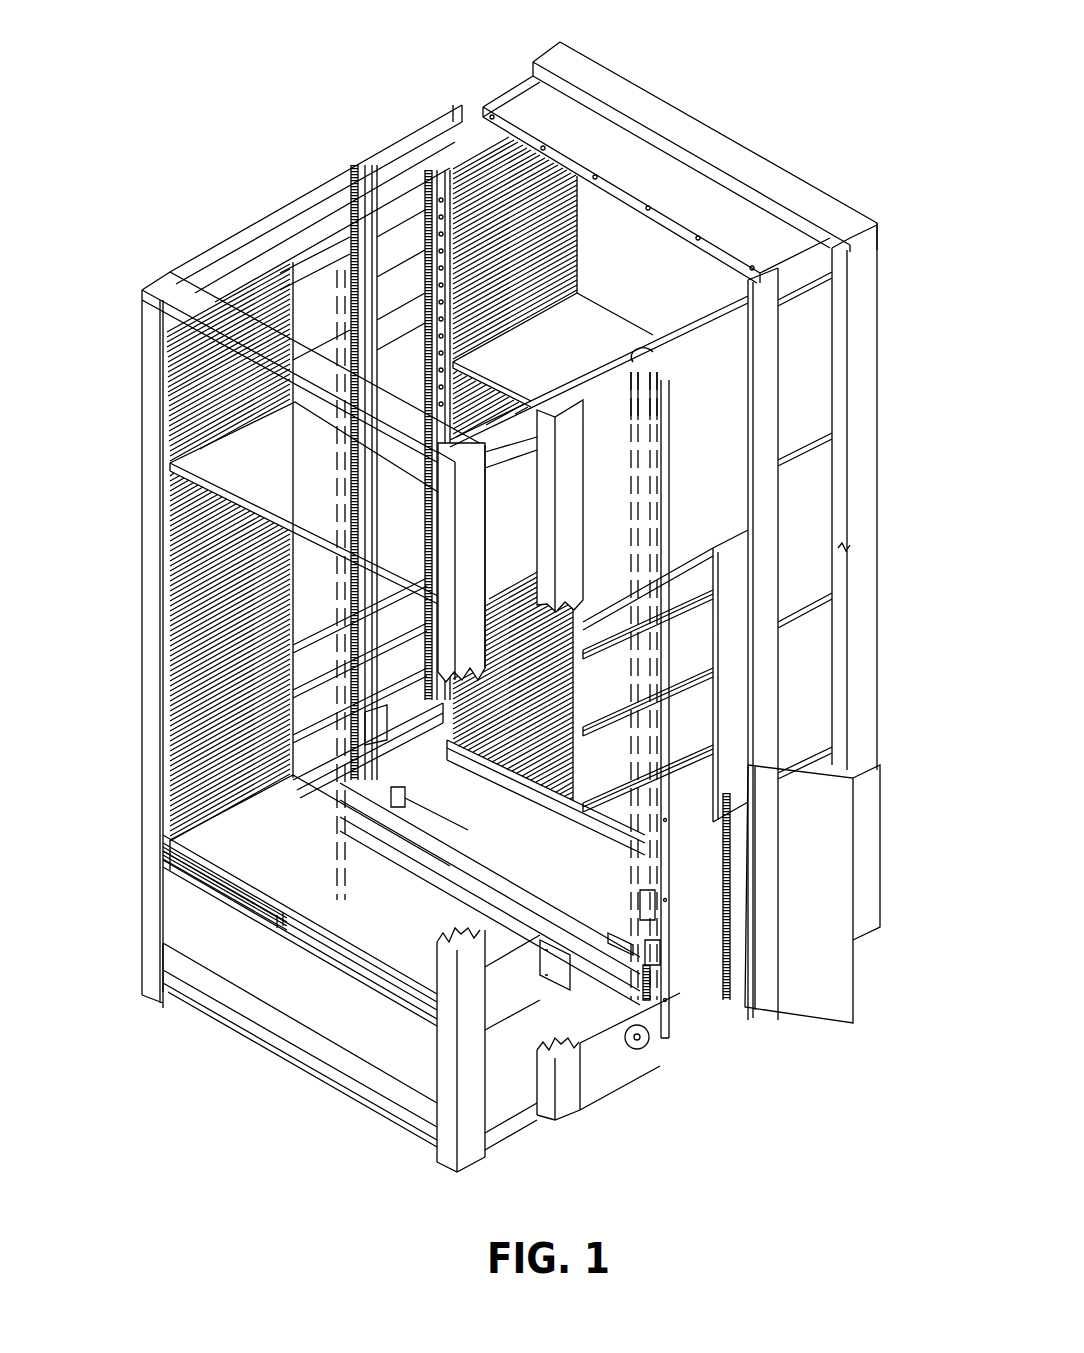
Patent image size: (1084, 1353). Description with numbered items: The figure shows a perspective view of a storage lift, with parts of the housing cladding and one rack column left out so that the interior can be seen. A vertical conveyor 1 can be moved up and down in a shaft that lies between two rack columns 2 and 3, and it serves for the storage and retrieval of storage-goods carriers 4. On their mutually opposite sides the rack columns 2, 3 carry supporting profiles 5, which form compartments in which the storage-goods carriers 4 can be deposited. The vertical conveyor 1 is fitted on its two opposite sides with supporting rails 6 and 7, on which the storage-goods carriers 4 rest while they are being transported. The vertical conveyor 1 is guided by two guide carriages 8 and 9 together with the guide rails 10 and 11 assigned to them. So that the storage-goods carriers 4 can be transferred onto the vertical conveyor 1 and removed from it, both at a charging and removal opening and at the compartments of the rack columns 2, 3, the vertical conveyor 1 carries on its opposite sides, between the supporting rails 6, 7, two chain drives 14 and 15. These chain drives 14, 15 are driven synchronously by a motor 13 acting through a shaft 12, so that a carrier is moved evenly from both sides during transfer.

The vertical conveyor 1 is at (685, 893).
The rack column 2 is at (210, 252).
The rack column 3 is at (484, 66).
The storage-goods carrier 4 is at (297, 476).
The supporting profile 5 is at (173, 362).
The supporting rail 6 is at (417, 707).
The supporting rail 7 is at (697, 857).
The guide carriage 8 is at (377, 723).
The guide carriage 9 is at (657, 953).
The guide rail 10 is at (375, 242).
The guide rail 11 is at (660, 736).
The shaft 12 is at (485, 843).
The motor 13 is at (605, 873).
The chain drive 14 is at (376, 768).
The chain drive 15 is at (586, 918).